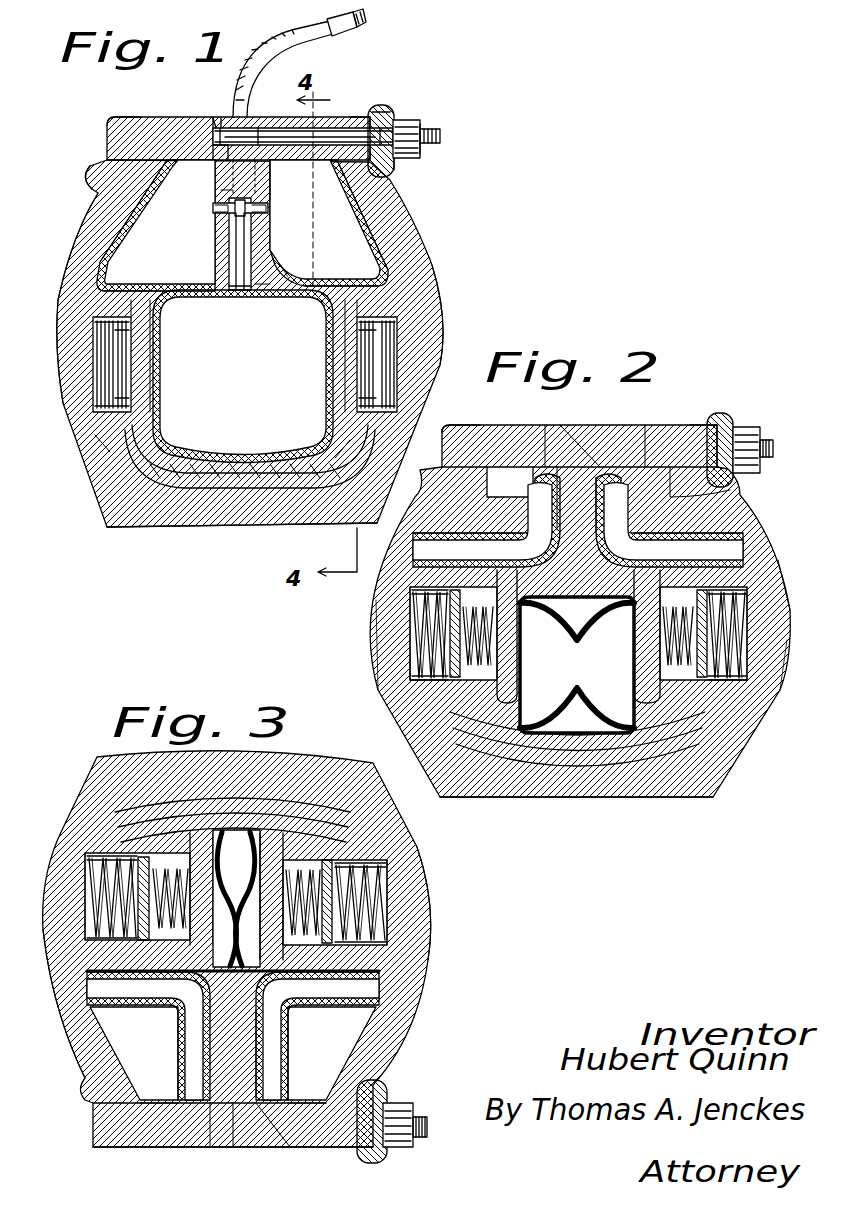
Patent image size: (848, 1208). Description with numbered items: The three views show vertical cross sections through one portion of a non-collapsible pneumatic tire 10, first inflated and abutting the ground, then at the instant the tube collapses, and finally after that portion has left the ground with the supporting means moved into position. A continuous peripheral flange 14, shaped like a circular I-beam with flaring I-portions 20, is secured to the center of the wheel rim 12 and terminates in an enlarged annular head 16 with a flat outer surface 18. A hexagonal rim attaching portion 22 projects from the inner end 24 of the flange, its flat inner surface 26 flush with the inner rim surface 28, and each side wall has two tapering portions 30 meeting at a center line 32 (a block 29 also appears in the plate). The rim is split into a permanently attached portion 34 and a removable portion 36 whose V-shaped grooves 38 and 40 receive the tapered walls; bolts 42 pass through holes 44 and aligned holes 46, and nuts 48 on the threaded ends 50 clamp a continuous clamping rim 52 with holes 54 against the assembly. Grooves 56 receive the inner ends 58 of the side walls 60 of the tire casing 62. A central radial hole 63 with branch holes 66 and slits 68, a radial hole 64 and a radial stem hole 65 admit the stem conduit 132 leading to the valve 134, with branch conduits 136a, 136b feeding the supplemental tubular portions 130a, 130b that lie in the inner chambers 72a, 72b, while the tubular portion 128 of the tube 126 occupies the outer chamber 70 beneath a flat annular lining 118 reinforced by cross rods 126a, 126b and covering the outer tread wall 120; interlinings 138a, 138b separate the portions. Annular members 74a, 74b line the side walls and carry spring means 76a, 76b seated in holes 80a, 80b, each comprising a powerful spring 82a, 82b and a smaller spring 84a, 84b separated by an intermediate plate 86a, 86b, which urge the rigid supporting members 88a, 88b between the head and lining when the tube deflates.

In FIG. 1, the non-collapsible pneumatic tire 10 is at (462, 270).
In FIG. 2, the non-collapsible pneumatic tire 10 is at (780, 521).
In FIG. 3, the non-collapsible pneumatic tire 10 is at (404, 1020).
In FIG. 1, the wheel rim 12 is at (334, 119).
In FIG. 2, the wheel rim 12 is at (661, 427).
In FIG. 3, the wheel rim 12 is at (331, 1143).
In FIG. 1, the continuous peripheral flange 14 is at (272, 234).
In FIG. 2, the continuous peripheral flange 14 is at (620, 497).
In FIG. 3, the continuous peripheral flange 14 is at (262, 1043).
In FIG. 1, the annular head 16 is at (288, 276).
In FIG. 2, the annular head 16 is at (624, 614).
In FIG. 3, the annular head 16 is at (292, 970).
In FIG. 1, the flat outer surface 18 is at (212, 293).
In FIG. 2, the flat outer surface 18 is at (567, 624).
In FIG. 3, the flat outer surface 18 is at (288, 950).
In FIG. 3, the I-portions 20 is at (183, 1094).
In FIG. 1, the hexagonal rim attaching portion 22 is at (262, 122).
In FIG. 2, the hexagonal rim attaching portion 22 is at (588, 427).
In FIG. 3, the hexagonal rim attaching portion 22 is at (233, 1147).
In FIG. 1, the inner end 24 is at (279, 186).
In FIG. 2, the inner end 24 is at (530, 482).
In FIG. 1, the flat inner surface 26 is at (214, 116).
In FIG. 2, the flat inner surface 26 is at (567, 425).
In FIG. 3, the flat inner surface 26 is at (223, 1147).
In FIG. 1, the inner rim surface 28 is at (153, 121).
In FIG. 2, the inner rim surface 28 is at (478, 427).
In FIG. 3, the inner rim surface 28 is at (157, 1137).
In FIG. 3, the block 29 is at (275, 1143).
In FIG. 1, the outwardly tapering portions 30 is at (222, 127).
In FIG. 2, the outwardly tapering portions 30 is at (545, 427).
In FIG. 1, the center line 32 is at (213, 133).
In FIG. 2, the center line 32 is at (645, 427).
In FIG. 1, the permanently attached rim portion 34 is at (118, 119).
In FIG. 1, the removable rim portion 36 is at (362, 116).
In FIG. 2, the removable rim portion 36 is at (698, 425).
In FIG. 1, the V-shaped groove 38 is at (210, 187).
In FIG. 1, the V-shaped groove 40 is at (323, 188).
In FIG. 2, the V-shaped groove 40 is at (627, 474).
In FIG. 1, the bolts 42 is at (401, 124).
In FIG. 2, the bolts 42 is at (760, 438).
In FIG. 3, the bolts 42 is at (423, 1137).
In FIG. 1, the holes 44 is at (260, 120).
In FIG. 1, the aligned holes 46 is at (389, 106).
In FIG. 1, the nuts 48 is at (423, 121).
In FIG. 1, the threaded ends 50 is at (441, 134).
In FIG. 2, the threaded ends 50 is at (772, 451).
In FIG. 1, the continuous clamping rim 52 is at (400, 112).
In FIG. 2, the continuous clamping rim 52 is at (721, 425).
In FIG. 3, the continuous clamping rim 52 is at (377, 1160).
In FIG. 1, the holes 54 is at (397, 164).
In FIG. 1, the grooves 56 is at (105, 154).
In FIG. 1, the inner ends 58 is at (123, 180).
In FIG. 1, the side walls 60 is at (56, 320).
In FIG. 1, the tire casing 62 is at (430, 317).
In FIG. 1, the central radial hole 63 is at (205, 194).
In FIG. 1, the tube stem 64 is at (242, 291).
In FIG. 1, the radial stem hole 65 is at (237, 116).
In FIG. 1, the branch holes 66 is at (217, 218).
In FIG. 1, the slits 68 is at (281, 292).
In FIG. 1, the outer chamber 70 is at (222, 465).
In FIG. 1, the inner chamber 72a is at (356, 245).
In FIG. 1, the inner chamber 72b is at (130, 242).
In FIG. 1, the flat continuous annular member 74a is at (398, 350).
In FIG. 2, the flat continuous annular member 74a is at (747, 650).
In FIG. 1, the flat continuous annular member 74b is at (112, 400).
In FIG. 2, the flat continuous annular member 74b is at (411, 597).
In FIG. 1, the spring means 76a is at (400, 368).
In FIG. 2, the spring means 76a is at (782, 571).
In FIG. 3, the spring means 76a is at (402, 932).
In FIG. 1, the spring means 76b is at (93, 347).
In FIG. 2, the spring means 76b is at (400, 616).
In FIG. 3, the spring means 76b is at (78, 993).
In FIG. 2, the holes 80a is at (748, 604).
In FIG. 3, the holes 80a is at (395, 860).
In FIG. 2, the holes 80b is at (406, 678).
In FIG. 3, the holes 80b is at (83, 853).
In FIG. 2, the more powerful spring 82a is at (767, 670).
In FIG. 3, the more powerful spring 82a is at (387, 884).
In FIG. 2, the more powerful spring 82b is at (409, 648).
In FIG. 3, the more powerful spring 82b is at (87, 875).
In FIG. 2, the inner smaller spring 84a is at (663, 607).
In FIG. 3, the inner smaller spring 84a is at (292, 872).
In FIG. 2, the inner smaller spring 84b is at (490, 607).
In FIG. 3, the inner smaller spring 84b is at (163, 868).
In FIG. 2, the intermediate plate 86a is at (699, 676).
In FIG. 3, the intermediate plate 86a is at (327, 901).
In FIG. 2, the intermediate plate 86b is at (457, 677).
In FIG. 3, the intermediate plate 86b is at (143, 898).
In FIG. 1, the rigid supporting member 88a is at (345, 373).
In FIG. 2, the rigid supporting member 88a is at (659, 698).
In FIG. 3, the rigid supporting member 88a is at (272, 832).
In FIG. 1, the rigid supporting member 88b is at (157, 403).
In FIG. 2, the rigid supporting member 88b is at (497, 698).
In FIG. 3, the rigid supporting member 88b is at (197, 950).
In FIG. 1, the flat annular lining 118 is at (143, 527).
In FIG. 2, the flat annular lining 118 is at (524, 763).
In FIG. 3, the flat annular lining 118 is at (280, 815).
In FIG. 1, the outer tread wall 120 is at (273, 447).
In FIG. 2, the outer tread wall 120 is at (578, 772).
In FIG. 3, the outer tread wall 120 is at (232, 800).
In FIG. 1, the pneumatic tube 126 is at (180, 530).
In FIG. 2, the pneumatic tube 126 is at (607, 710).
In FIG. 1, the cross rods 126a is at (308, 478).
In FIG. 1, the cross rods 126b is at (100, 508).
In FIG. 1, the tubular portion 128 is at (200, 482).
In FIG. 2, the tubular portion 128 is at (505, 757).
In FIG. 3, the tubular portion 128 is at (318, 800).
In FIG. 1, the supplemental tubular portion 130a is at (340, 222).
In FIG. 2, the supplemental tubular portion 130a is at (630, 540).
In FIG. 3, the supplemental tubular portion 130a is at (310, 998).
In FIG. 1, the supplemental tubular portion 130b is at (143, 230).
In FIG. 2, the supplemental tubular portion 130b is at (533, 530).
In FIG. 3, the supplemental tubular portion 130b is at (186, 1010).
In FIG. 1, the stem conduit 132 is at (243, 291).
In FIG. 1, the valve 134 is at (318, 40).
In FIG. 1, the branch tubular conduit 136a is at (268, 210).
In FIG. 1, the branch tubular conduit 136b is at (224, 209).
In FIG. 1, the interlining 138a is at (404, 270).
In FIG. 2, the interlining 138a is at (740, 506).
In FIG. 3, the interlining 138a is at (402, 976).
In FIG. 1, the interlining 138b is at (110, 270).
In FIG. 2, the interlining 138b is at (424, 533).
In FIG. 3, the interlining 138b is at (134, 967).